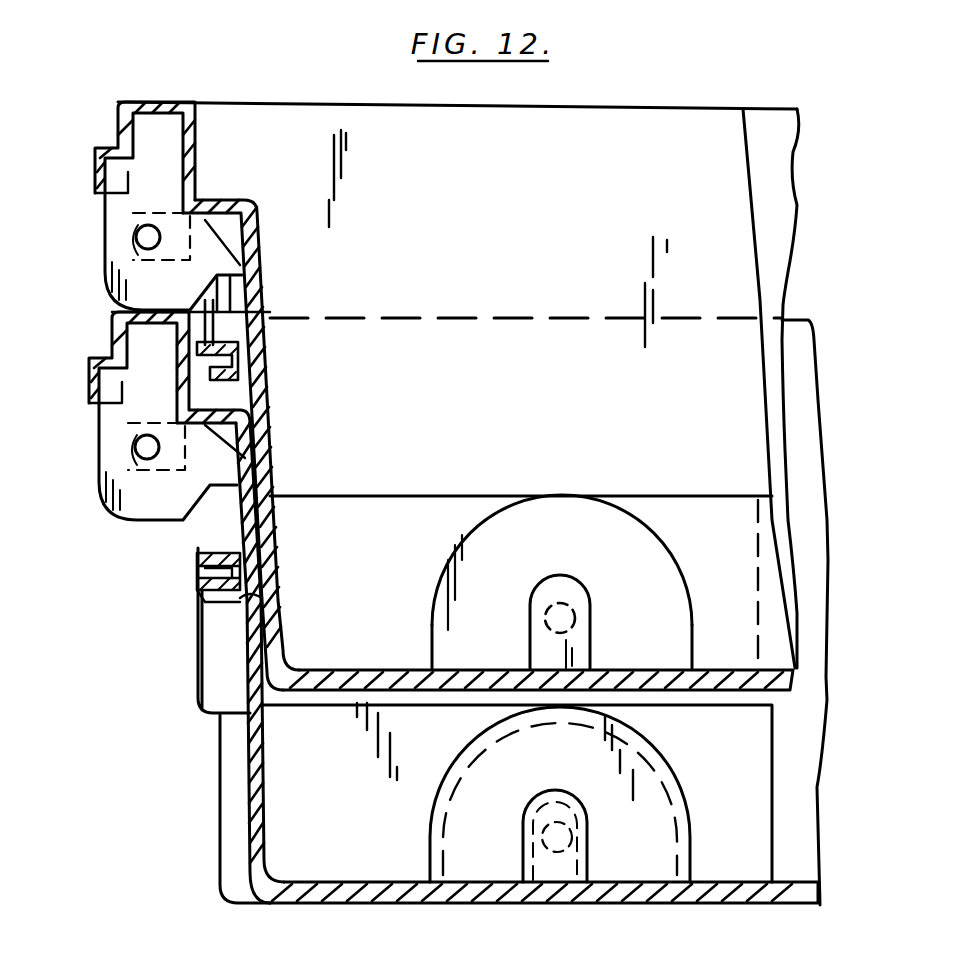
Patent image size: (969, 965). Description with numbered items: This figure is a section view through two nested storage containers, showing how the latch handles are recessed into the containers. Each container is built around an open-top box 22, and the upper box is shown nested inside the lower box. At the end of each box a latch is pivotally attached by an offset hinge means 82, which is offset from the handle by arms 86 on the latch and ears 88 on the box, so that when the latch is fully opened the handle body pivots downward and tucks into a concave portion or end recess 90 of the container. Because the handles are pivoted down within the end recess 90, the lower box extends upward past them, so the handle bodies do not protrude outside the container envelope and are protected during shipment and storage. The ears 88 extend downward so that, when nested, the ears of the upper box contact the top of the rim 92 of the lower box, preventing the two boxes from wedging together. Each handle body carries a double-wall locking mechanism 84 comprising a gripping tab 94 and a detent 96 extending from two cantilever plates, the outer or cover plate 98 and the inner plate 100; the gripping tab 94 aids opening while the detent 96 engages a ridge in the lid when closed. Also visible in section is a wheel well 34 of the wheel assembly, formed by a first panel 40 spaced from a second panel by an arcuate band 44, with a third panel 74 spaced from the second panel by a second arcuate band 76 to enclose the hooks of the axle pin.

The open-top box 22 is at (812, 263).
The wheel well 34 is at (580, 486).
The first panel 40 is at (627, 530).
The arcuate band 44 is at (470, 525).
The third panel 74 is at (577, 597).
The second arcuate band 76 is at (573, 580).
The offset hinge means 82 is at (128, 247).
The double-wall locking mechanism 84 is at (250, 378).
The arms 86 is at (220, 226).
The ears 88 is at (107, 211).
The end recess 90 is at (262, 386).
The rim 92 is at (152, 100).
The gripping tab 94 is at (197, 605).
The detent 96 is at (197, 557).
The cover plate 98 is at (262, 609).
The inner plate 100 is at (265, 534).